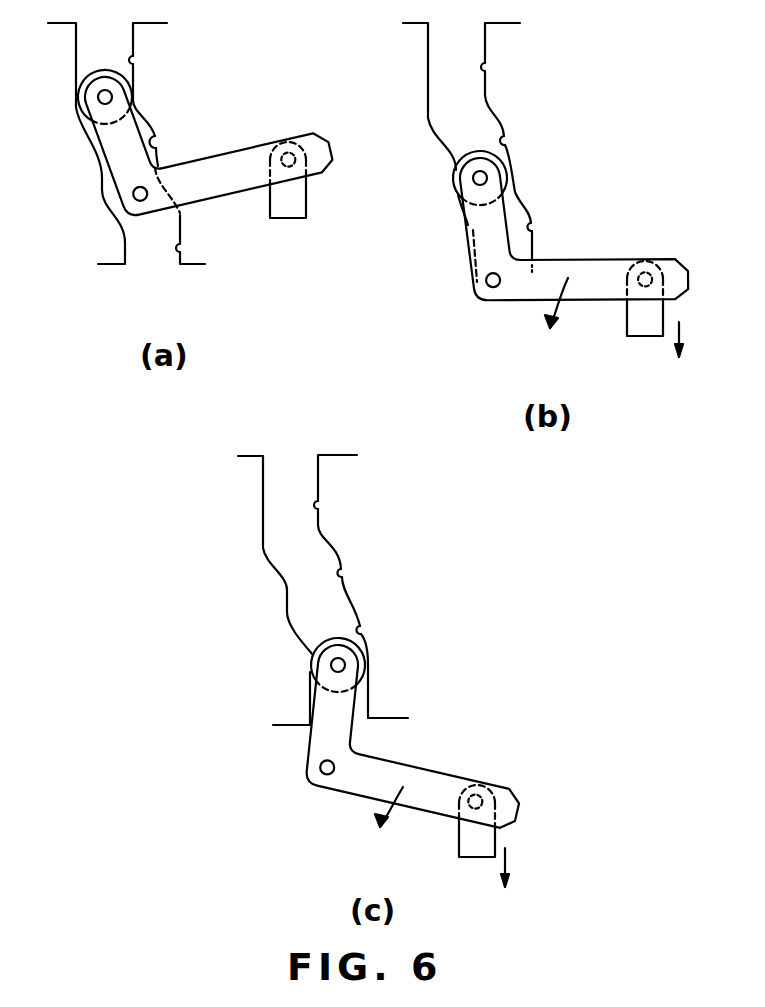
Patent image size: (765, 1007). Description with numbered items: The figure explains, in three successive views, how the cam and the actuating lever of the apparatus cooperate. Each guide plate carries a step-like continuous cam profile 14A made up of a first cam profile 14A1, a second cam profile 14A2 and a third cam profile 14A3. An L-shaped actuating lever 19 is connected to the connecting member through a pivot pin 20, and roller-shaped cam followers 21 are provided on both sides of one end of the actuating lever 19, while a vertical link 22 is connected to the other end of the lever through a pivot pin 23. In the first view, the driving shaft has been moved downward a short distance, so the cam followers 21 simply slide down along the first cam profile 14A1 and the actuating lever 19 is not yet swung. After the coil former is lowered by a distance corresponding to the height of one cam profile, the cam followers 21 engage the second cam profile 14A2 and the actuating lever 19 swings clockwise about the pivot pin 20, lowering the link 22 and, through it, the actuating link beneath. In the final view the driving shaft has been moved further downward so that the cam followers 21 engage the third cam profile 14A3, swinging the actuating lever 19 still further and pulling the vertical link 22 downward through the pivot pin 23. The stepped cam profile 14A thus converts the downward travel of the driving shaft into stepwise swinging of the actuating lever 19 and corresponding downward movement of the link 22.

The step-like continuous cam profile 14A is at (125, 50).
The first cam profile 14A1 is at (133, 60).
The second cam profile 14A2 is at (155, 142).
The third cam profile 14A3 is at (177, 252).
The actuating lever 19 is at (210, 190).
The pivot pin 20 is at (133, 196).
The cam follower 21 is at (80, 100).
The vertical link 22 is at (305, 216).
The pivot pin 23 is at (287, 152).